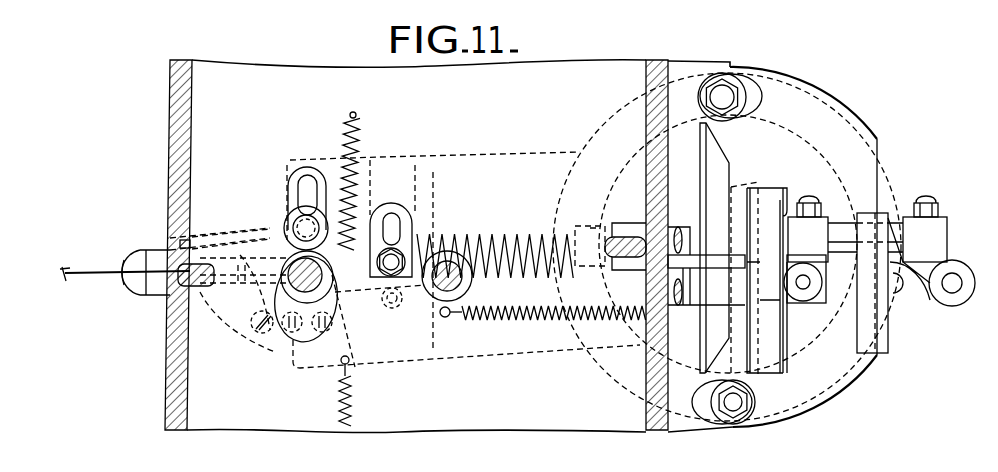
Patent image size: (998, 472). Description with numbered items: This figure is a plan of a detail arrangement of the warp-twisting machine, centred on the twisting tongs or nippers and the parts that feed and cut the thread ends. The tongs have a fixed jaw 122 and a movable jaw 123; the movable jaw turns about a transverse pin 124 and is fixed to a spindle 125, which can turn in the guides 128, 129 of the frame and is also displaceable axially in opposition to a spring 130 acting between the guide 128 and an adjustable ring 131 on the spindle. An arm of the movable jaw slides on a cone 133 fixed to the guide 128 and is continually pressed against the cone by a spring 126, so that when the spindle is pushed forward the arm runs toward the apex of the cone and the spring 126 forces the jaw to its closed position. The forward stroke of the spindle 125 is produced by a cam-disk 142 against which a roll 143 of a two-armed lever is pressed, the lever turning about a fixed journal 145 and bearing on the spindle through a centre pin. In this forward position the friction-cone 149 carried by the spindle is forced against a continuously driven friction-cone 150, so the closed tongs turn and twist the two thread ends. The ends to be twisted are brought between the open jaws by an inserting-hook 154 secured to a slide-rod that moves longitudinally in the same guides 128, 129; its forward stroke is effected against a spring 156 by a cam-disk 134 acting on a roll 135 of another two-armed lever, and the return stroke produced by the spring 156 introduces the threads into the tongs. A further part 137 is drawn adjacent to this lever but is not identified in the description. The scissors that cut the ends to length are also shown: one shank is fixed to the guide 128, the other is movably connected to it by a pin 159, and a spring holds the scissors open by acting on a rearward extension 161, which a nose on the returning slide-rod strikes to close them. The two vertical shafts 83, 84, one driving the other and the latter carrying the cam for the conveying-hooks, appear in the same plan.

The vertical shaft 83 is at (280, 235).
The vertical shaft 84 is at (461, 283).
The fixed jaw 122 is at (138, 258).
The movable jaw 123 is at (166, 316).
The transverse pin 124 is at (203, 290).
The spindle 125 is at (492, 236).
The spring 126 is at (266, 245).
The guide 128 is at (440, 312).
The guide 129 is at (628, 274).
The spring 130 is at (522, 235).
The adjustable ring 131 is at (588, 223).
The cone 133 is at (345, 222).
The cam-disk 134 is at (882, 338).
The roll 135 is at (955, 302).
The nut 137 is at (930, 203).
The cam-disk 142 is at (770, 356).
The roll 143 is at (808, 300).
The fixed journal 145 is at (812, 195).
The friction-cone 149 is at (757, 193).
The friction-cone 150 is at (719, 168).
The inserting-hook 154 is at (112, 270).
The spring 156 is at (538, 322).
The pin 159 is at (262, 335).
The rearward extension 161 is at (312, 328).